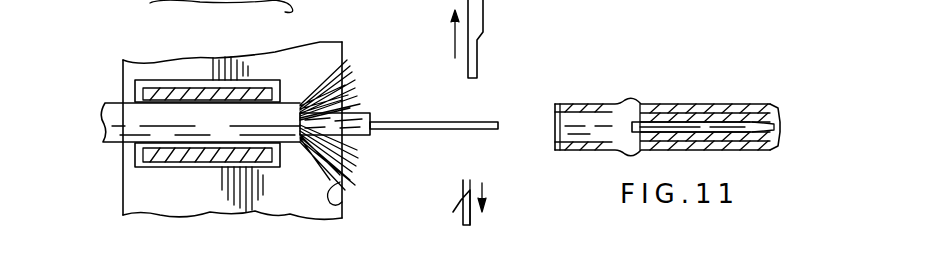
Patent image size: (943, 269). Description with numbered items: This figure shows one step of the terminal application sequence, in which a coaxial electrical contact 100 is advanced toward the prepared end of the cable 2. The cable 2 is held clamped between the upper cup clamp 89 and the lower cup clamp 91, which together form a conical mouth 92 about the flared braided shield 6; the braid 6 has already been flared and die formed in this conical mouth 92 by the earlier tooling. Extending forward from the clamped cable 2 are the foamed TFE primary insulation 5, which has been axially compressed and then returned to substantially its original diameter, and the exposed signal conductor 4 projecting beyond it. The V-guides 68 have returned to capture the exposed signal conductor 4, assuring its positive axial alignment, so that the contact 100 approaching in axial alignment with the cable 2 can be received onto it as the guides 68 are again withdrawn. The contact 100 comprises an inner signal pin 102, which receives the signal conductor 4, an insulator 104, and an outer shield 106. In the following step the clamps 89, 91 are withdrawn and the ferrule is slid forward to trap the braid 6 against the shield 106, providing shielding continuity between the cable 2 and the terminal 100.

The cable 2 is at (112, 98).
The signal conductor 4 is at (418, 121).
The foamed TFE primary insulation 5 is at (363, 112).
The braided shield 6 is at (347, 70).
The V-guides 68 is at (483, 20).
The upper cup clamp 89 is at (303, 47).
The lower cup clamp 91 is at (152, 0).
The conical mouth 92 is at (340, 183).
The coaxial electrical contact 100 is at (618, 103).
The inner signal pin 102 is at (750, 104).
The insulator 104 is at (728, 108).
The outer shield 106 is at (672, 108).